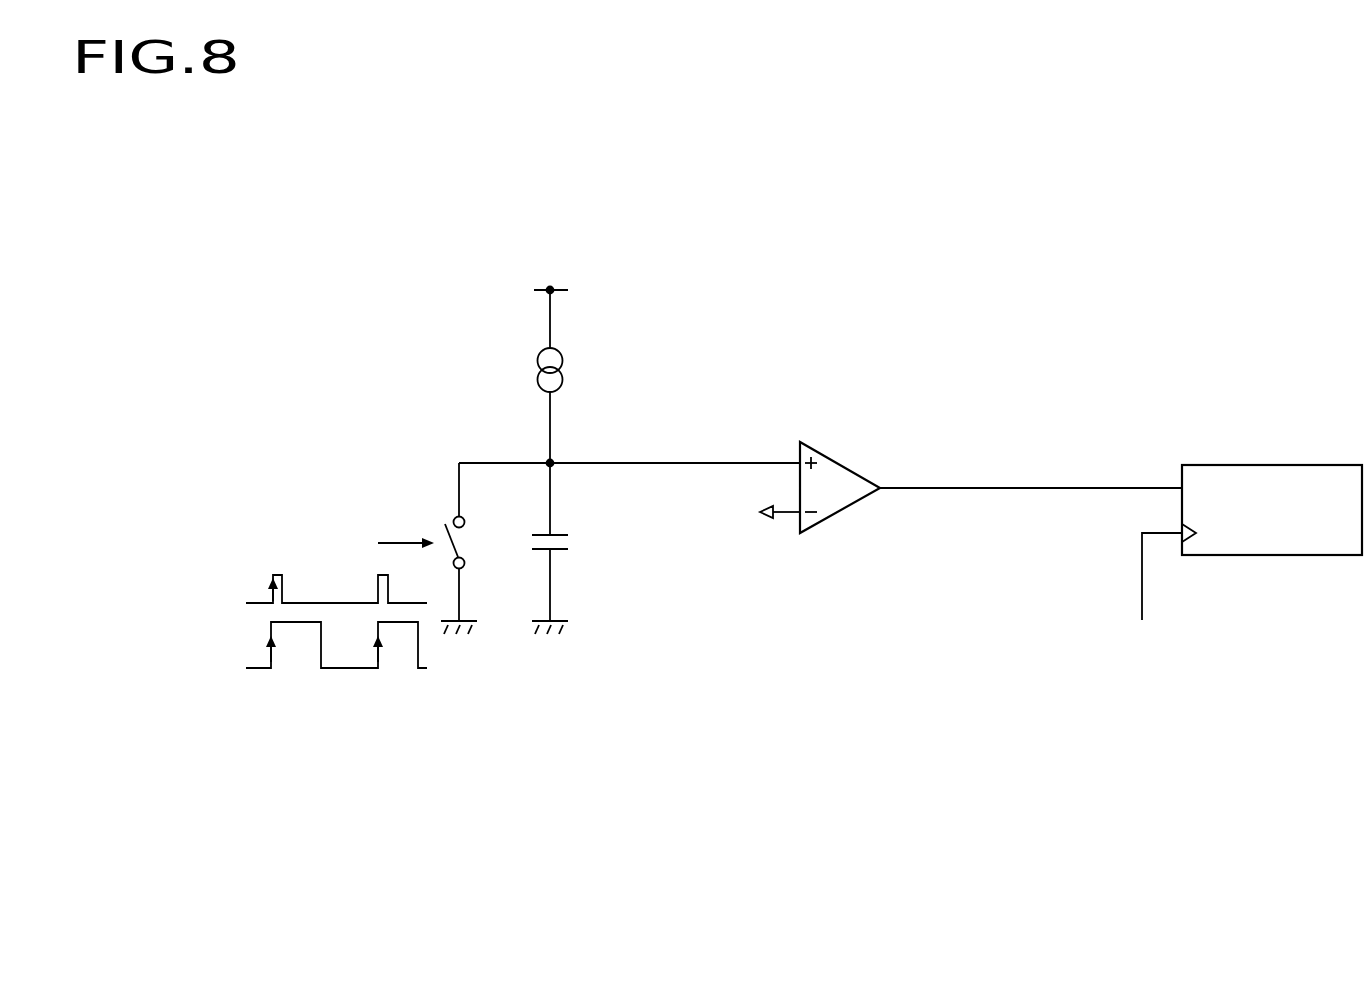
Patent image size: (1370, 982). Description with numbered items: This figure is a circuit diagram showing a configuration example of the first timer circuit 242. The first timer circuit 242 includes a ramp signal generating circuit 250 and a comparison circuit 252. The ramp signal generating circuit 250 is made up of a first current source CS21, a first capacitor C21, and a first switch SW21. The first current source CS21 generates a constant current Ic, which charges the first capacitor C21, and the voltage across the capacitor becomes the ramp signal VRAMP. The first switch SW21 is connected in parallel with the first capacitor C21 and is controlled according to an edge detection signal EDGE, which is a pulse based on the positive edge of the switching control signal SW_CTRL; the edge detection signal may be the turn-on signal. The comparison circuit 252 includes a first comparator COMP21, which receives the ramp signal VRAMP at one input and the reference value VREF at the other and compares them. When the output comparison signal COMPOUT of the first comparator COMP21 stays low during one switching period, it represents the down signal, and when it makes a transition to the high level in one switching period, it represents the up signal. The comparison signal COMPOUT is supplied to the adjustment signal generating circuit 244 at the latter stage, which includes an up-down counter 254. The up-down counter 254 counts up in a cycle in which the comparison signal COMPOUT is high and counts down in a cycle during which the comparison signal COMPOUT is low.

The first timer circuit 242 is at (1050, 247).
The ramp signal generating circuit 250 is at (593, 705).
The comparison circuit 252 is at (892, 600).
The up-down counter 254 is at (1252, 517).
The adjustment signal generating circuit 244 is at (1276, 464).
The first current source CS21 is at (563, 360).
The first switch SW21 is at (504, 518).
The first capacitor C21 is at (578, 548).
The first comparator COMP21 is at (866, 440).